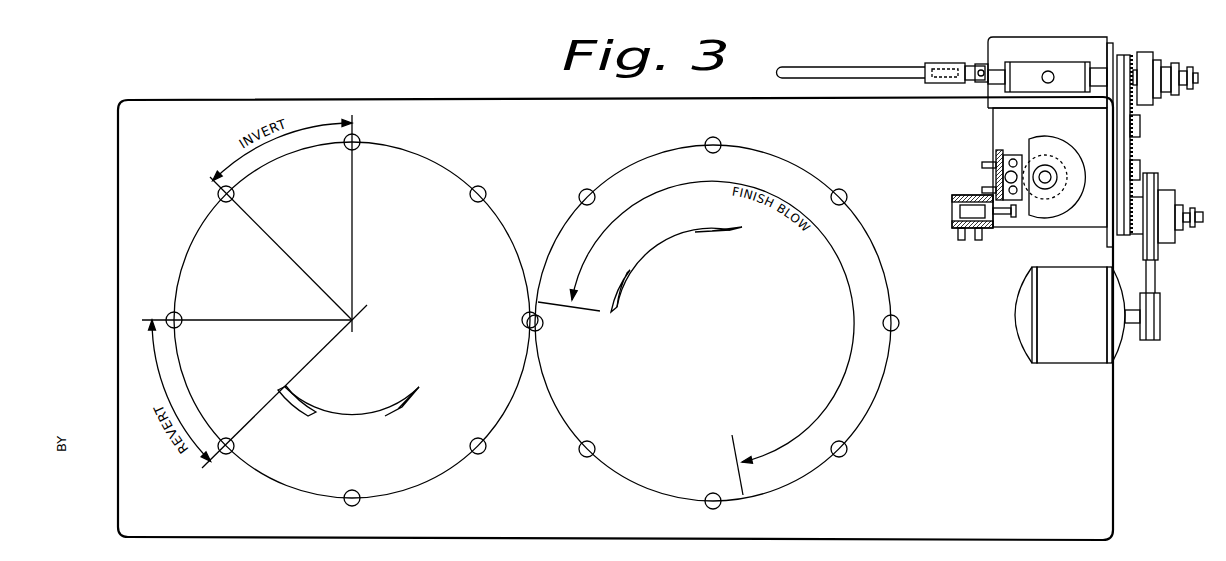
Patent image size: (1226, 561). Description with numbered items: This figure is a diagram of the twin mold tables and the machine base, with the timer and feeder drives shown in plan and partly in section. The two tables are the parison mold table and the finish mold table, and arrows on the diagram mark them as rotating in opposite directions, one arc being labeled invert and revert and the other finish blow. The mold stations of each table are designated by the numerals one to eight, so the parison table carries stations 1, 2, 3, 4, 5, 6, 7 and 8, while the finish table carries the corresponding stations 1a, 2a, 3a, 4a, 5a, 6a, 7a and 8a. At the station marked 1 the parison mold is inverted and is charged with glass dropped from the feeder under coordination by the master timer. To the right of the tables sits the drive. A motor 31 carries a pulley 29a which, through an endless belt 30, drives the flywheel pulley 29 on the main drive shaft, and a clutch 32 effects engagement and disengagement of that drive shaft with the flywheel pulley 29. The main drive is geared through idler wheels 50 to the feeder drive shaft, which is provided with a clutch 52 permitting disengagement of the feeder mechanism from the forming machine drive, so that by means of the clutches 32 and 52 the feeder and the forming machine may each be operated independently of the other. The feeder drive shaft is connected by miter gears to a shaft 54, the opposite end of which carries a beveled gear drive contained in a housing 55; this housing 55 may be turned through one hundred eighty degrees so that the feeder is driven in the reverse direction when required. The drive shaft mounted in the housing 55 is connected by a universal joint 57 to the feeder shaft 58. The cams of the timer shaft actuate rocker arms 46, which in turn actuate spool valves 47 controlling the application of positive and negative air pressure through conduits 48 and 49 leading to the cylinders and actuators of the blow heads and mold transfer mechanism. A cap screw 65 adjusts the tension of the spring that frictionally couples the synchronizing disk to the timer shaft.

The mold station 1 is at (178, 315).
The mold station 2 is at (226, 436).
The mold station 3 is at (352, 489).
The mold station 4 is at (474, 441).
The mold station 5 is at (525, 322).
The mold station 6 is at (478, 204).
The mold station 7 is at (358, 151).
The mold station 8 is at (233, 197).
The mold station 1a is at (545, 324).
The mold station 2a is at (597, 201).
The mold station 3a is at (719, 154).
The mold station 4a is at (839, 206).
The mold station 5a is at (882, 324).
The mold station 6a is at (836, 441).
The mold station 7a is at (715, 493).
The mold station 8a is at (595, 441).
The flywheel pulley 29 is at (1158, 182).
The pulley 29a is at (1160, 311).
The endless belt 30 is at (1156, 276).
The motor 31 is at (1075, 364).
The clutch 32 is at (1178, 210).
The rocker arm 46 is at (1008, 163).
The spool valve 47 is at (954, 211).
The conduit 48 is at (982, 238).
The conduit 49 is at (957, 238).
The idler wheel 50 is at (1135, 152).
The clutch 52 is at (1163, 68).
The shaft 54 is at (1050, 70).
The housing 55 is at (1090, 62).
The universal joint 57 is at (981, 63).
The feeder shaft 58 is at (808, 66).
The cap screw 65 is at (1052, 172).